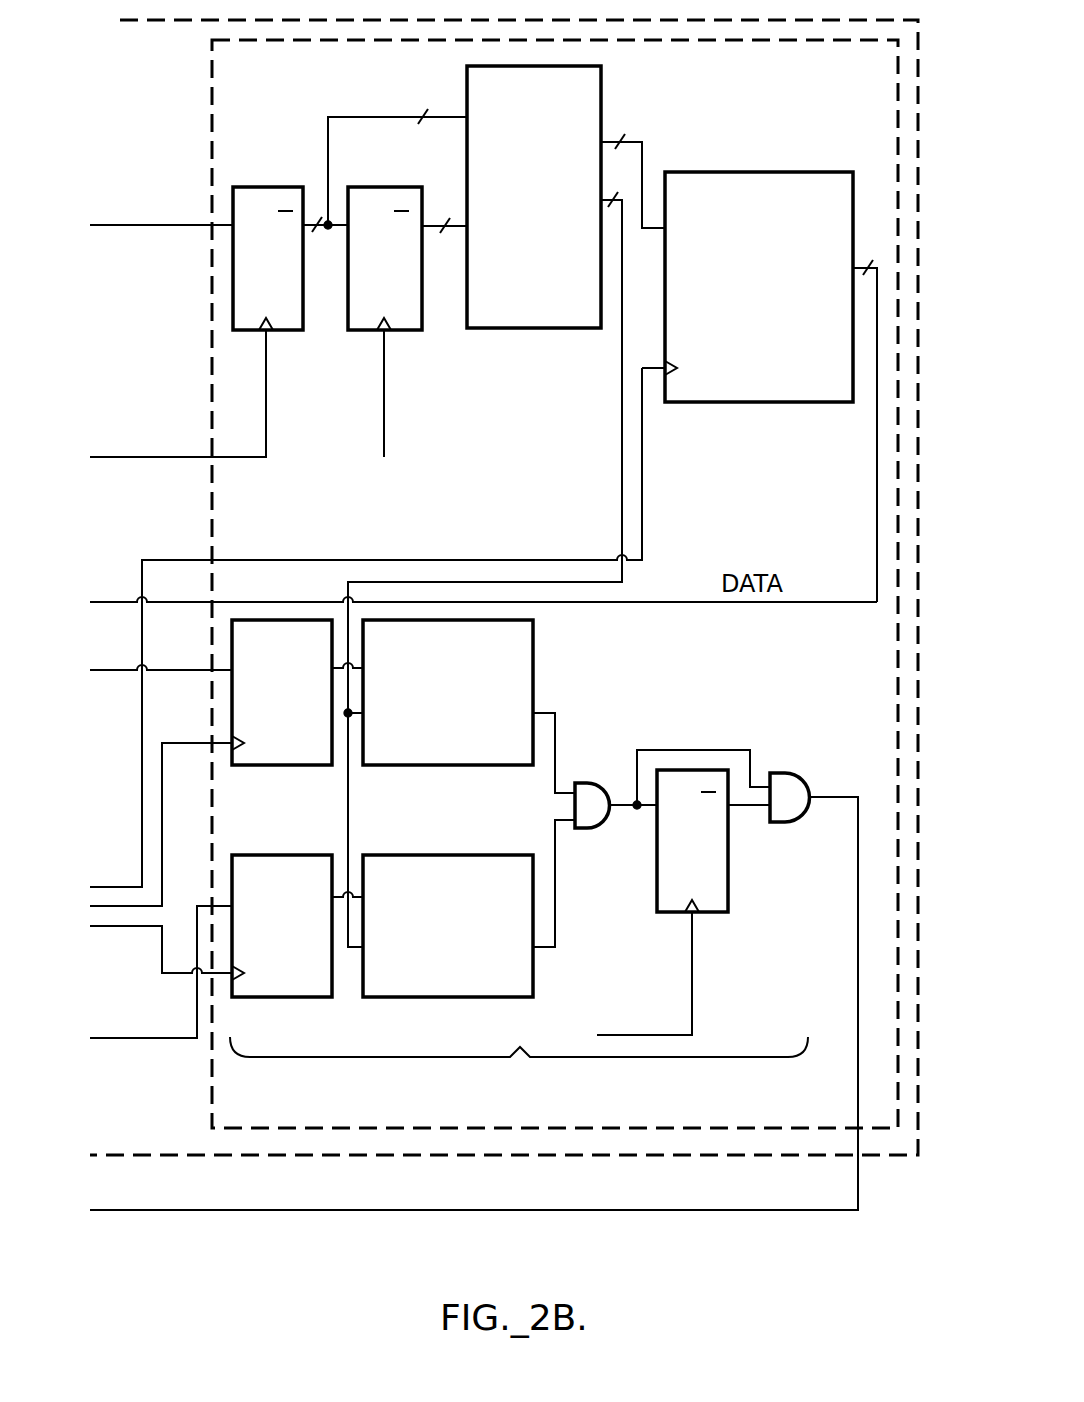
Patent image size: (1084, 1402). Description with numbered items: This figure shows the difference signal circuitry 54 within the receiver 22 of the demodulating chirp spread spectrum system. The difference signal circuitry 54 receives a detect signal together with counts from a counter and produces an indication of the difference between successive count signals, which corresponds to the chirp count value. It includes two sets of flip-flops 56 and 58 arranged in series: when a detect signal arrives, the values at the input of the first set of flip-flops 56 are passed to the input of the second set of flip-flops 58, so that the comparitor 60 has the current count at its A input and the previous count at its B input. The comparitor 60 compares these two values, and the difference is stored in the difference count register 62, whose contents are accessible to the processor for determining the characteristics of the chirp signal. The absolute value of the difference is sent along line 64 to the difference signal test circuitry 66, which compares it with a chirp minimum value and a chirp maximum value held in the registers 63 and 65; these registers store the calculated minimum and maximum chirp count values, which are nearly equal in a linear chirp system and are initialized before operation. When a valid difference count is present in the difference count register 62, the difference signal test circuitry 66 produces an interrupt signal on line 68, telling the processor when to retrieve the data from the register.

The receiver 22 is at (382, 1230).
The difference signal circuitry 54 is at (250, 1093).
The flip-flops 56 is at (283, 193).
The flip-flops 58 is at (405, 320).
The comparitor 60 is at (568, 322).
The difference count register 62 is at (770, 183).
The register 63 is at (312, 760).
The line 64 is at (603, 583).
The register 65 is at (258, 860).
The difference signal test circuitry 66 is at (520, 860).
The line 68 is at (858, 930).